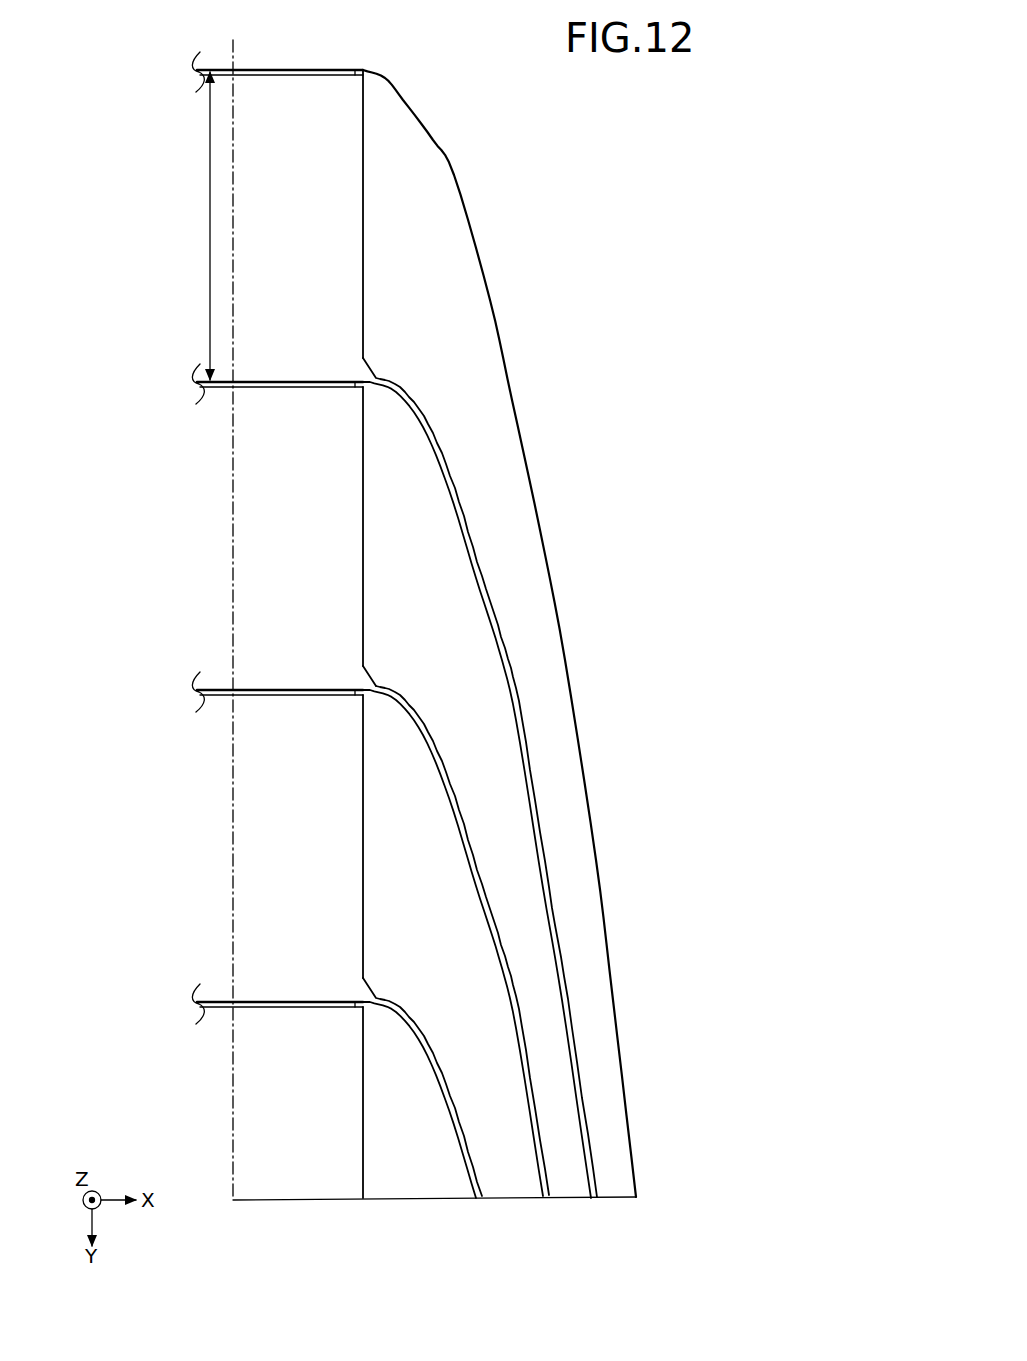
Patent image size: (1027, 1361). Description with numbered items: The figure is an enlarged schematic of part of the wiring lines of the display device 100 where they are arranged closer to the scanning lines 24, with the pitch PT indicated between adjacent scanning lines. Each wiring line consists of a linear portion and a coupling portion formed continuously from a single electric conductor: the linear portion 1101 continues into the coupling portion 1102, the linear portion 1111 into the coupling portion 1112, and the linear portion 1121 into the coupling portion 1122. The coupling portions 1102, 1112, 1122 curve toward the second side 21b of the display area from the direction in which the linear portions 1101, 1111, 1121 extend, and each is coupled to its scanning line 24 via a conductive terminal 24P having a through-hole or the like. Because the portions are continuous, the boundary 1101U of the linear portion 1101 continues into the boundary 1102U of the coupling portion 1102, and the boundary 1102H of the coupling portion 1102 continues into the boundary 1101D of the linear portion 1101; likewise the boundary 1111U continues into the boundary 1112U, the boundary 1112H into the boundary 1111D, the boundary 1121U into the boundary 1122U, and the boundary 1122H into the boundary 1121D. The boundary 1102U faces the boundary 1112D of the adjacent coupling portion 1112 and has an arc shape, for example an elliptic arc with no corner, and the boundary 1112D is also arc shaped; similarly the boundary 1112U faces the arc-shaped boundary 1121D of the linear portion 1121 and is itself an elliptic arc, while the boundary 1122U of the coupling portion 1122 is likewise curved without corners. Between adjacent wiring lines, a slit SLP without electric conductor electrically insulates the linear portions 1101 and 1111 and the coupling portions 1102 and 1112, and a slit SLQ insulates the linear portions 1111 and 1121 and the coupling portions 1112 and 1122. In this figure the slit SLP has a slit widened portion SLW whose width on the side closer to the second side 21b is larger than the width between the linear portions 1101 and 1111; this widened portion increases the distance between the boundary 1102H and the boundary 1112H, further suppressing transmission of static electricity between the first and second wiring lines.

The second side 21b is at (232, 29).
The scanning line 24 is at (271, 66).
The conductive terminal 24P is at (357, 66).
The pitch PT is at (194, 226).
The fluid guide structure 100 is at (540, 242).
The coupling portion 1122 is at (480, 301).
The boundary of the coupling portion 1122U is at (455, 172).
The boundary of the coupling portion 1122H is at (363, 286).
The linear portion 1121 is at (618, 1170).
The boundary of the linear portion 1121U is at (600, 858).
The boundary of the linear portion 1121D is at (433, 448).
The coupling portion 1112 is at (455, 633).
The boundary of the coupling portion 1112U is at (483, 557).
The boundary of the coupling portion 1112H is at (363, 540).
The boundary of the coupling portion 1112D is at (428, 749).
The slit widened portion SLW is at (363, 681).
The slit SLQ is at (548, 888).
The slit SLP is at (499, 958).
The coupling portion 1102 is at (405, 913).
The boundary of the coupling portion 1102U is at (467, 828).
The boundary of the coupling portion 1102H is at (363, 787).
The linear portion 1111 is at (566, 1137).
The boundary of the linear portion 1111U is at (583, 1063).
The boundary of the linear portion 1111D is at (512, 1044).
The linear portion 1101 is at (512, 1188).
The boundary of the linear portion 1101U is at (540, 1136).
The boundary of the linear portion 1101D is at (445, 1108).